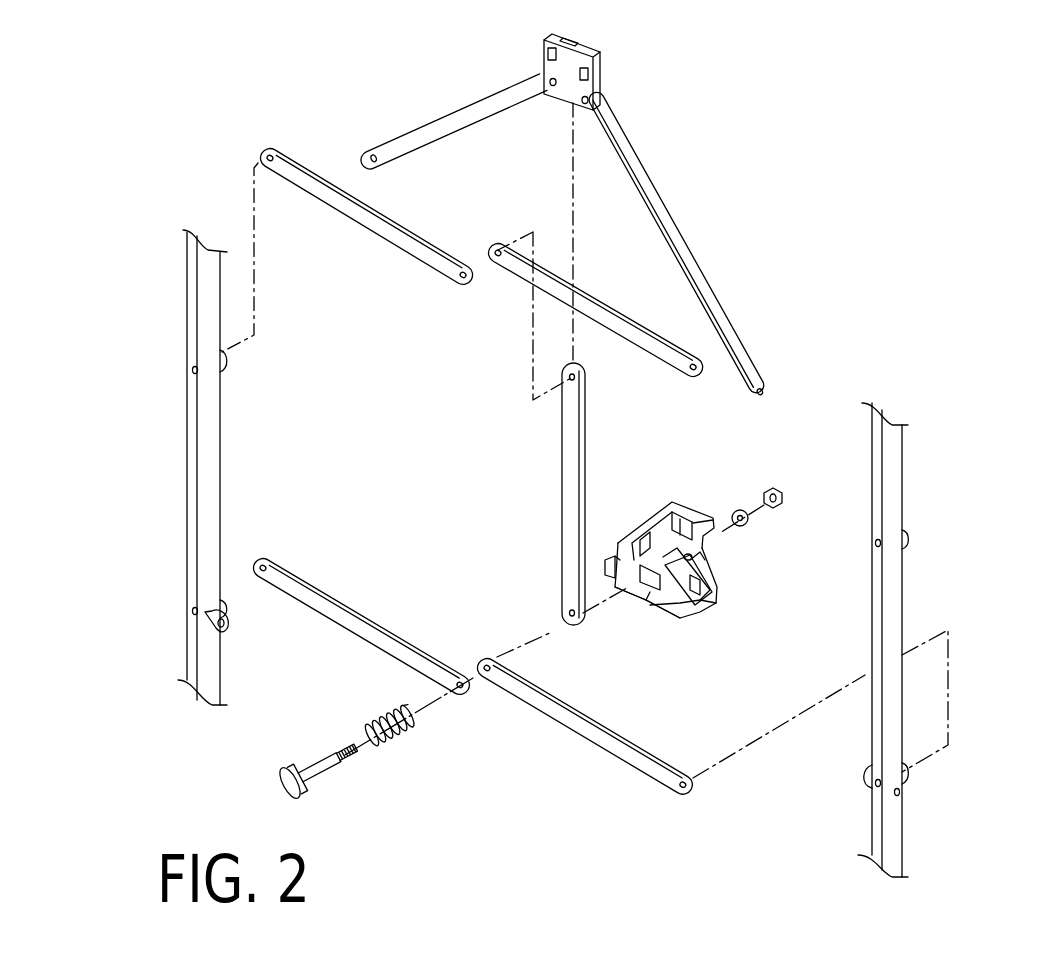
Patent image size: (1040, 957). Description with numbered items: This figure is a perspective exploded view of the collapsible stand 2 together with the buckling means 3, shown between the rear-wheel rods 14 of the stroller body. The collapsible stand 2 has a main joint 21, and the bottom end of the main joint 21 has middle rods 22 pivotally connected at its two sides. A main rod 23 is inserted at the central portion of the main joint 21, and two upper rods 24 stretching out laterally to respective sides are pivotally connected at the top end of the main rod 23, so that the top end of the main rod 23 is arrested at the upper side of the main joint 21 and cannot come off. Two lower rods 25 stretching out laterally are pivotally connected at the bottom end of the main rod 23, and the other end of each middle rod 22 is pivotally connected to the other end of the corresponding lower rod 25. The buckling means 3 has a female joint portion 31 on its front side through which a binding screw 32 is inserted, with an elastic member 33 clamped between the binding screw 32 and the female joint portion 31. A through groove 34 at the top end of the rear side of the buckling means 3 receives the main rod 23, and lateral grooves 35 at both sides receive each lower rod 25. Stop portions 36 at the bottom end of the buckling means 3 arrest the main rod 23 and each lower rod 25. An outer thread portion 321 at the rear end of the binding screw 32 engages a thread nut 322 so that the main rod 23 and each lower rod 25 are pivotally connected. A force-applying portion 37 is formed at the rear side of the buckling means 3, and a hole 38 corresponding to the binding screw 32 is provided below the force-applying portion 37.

The collapsible stand 2 is at (720, 121).
The rear-wheel rod 14 is at (895, 450).
The main joint 21 is at (592, 52).
The middle rod 22 is at (690, 240).
The main rod 23 is at (561, 448).
The upper rod 24 is at (667, 337).
The lower rod 25 is at (587, 730).
The buckling means 3 is at (637, 520).
The female joint portion 31 is at (642, 585).
The binding screw 32 is at (321, 734).
The outer thread portion 321 is at (328, 760).
The thread nut 322 is at (783, 488).
The elastic member 33 is at (402, 740).
The through groove 34 is at (622, 548).
The lateral groove 35 is at (702, 565).
The stop portion 36 is at (710, 600).
The force-applying portion 37 is at (703, 503).
The hole 38 is at (692, 556).